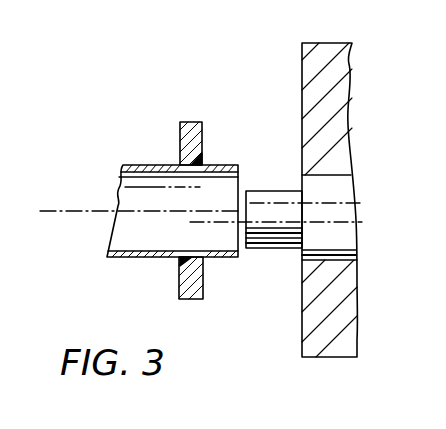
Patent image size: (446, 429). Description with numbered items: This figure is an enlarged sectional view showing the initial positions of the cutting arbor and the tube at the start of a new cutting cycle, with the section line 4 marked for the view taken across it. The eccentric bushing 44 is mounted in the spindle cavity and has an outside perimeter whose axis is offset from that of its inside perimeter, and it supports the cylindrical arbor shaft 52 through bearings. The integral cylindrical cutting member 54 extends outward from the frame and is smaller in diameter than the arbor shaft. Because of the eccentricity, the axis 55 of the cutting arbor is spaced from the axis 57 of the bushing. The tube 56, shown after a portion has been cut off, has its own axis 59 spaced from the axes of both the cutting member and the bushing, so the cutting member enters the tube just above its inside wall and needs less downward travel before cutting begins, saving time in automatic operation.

The section line 4- 4 is at (225, 85).
The eccentric bushing 44 is at (326, 58).
The arbor shaft 52 is at (332, 187).
The cutting member 54 is at (267, 243).
The axis of the cutting arbor 55 is at (333, 223).
The tube 56 is at (163, 164).
The axis of the bushing 57 is at (292, 203).
The axis of the tube 59 is at (63, 211).